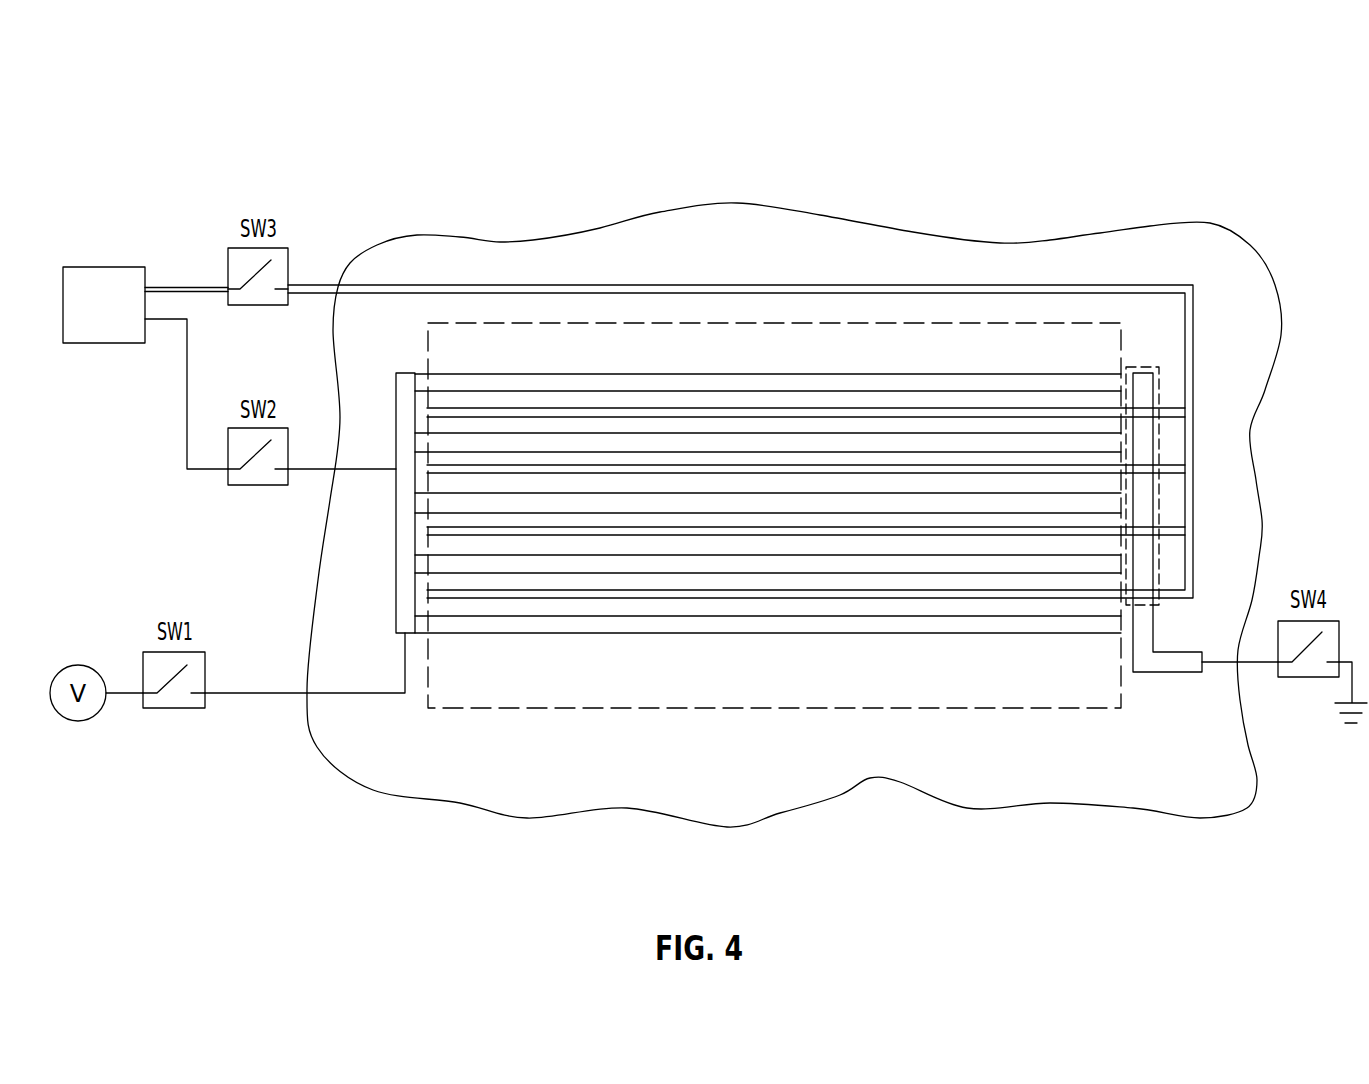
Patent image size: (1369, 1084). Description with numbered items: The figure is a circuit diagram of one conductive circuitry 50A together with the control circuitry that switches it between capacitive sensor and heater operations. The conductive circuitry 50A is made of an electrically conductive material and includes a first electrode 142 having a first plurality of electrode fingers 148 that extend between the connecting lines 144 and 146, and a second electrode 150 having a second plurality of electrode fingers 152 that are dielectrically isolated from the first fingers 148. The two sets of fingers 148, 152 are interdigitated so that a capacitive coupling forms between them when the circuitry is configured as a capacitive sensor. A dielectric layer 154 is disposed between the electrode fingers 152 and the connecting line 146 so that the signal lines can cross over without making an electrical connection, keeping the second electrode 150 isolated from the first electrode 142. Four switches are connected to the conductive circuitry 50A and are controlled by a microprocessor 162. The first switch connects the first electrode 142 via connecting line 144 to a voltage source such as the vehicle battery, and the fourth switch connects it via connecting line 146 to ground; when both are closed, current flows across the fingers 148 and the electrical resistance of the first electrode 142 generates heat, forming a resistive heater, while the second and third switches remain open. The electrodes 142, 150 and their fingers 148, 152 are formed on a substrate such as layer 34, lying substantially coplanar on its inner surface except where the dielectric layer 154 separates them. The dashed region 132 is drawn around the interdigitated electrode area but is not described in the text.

The conductive circuitry 50A is at (875, 147).
The layer 34 is at (1173, 817).
The microprocessor 162 is at (92, 267).
The sensing region 132 is at (550, 708).
The second electrode 150 is at (1197, 345).
The connecting line 144 is at (408, 588).
The first electrode 142 is at (393, 635).
The first plurality of electrode fingers 148 is at (818, 617).
The second plurality of electrode fingers 152 is at (972, 417).
The connecting line 146 is at (1142, 622).
The dielectric layer 154 is at (1160, 502).